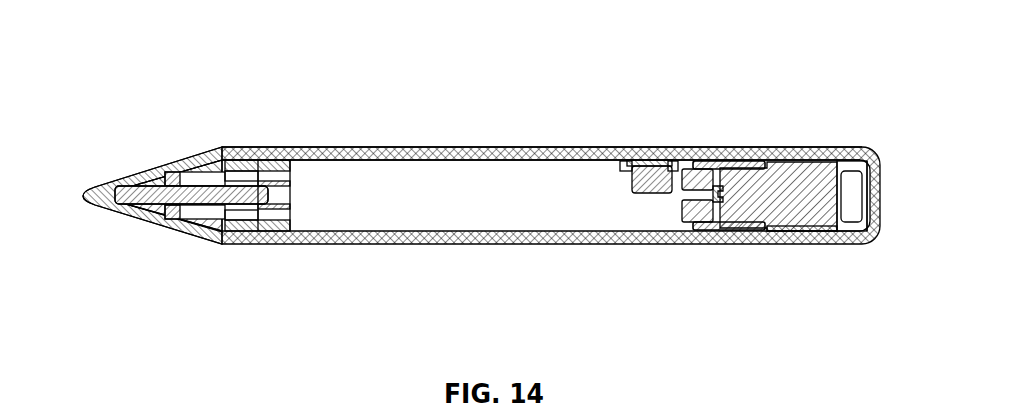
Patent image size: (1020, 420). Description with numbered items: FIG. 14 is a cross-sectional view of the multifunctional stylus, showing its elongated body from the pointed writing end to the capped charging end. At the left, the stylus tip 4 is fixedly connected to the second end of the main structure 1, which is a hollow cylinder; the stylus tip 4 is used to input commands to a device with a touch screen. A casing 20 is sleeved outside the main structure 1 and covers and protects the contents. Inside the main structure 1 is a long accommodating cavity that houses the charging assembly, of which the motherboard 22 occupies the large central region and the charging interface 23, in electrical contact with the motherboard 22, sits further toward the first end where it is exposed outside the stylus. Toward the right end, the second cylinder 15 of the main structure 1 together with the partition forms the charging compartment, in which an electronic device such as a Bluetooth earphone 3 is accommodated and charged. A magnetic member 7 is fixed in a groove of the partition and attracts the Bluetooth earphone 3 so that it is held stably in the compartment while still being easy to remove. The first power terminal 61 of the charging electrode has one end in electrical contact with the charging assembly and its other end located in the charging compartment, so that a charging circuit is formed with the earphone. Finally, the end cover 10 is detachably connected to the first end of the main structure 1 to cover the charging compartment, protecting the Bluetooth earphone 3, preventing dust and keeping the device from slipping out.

The main structure 1 is at (477, 234).
The casing 20 is at (485, 155).
The motherboard 22 is at (387, 185).
The stylus tip 4 is at (135, 187).
The charging interface 23 is at (648, 178).
The magnetic member 7 is at (716, 168).
The first power terminal 61 is at (720, 193).
The Bluetooth earphone 3 is at (790, 166).
The second cylinder 15 is at (773, 233).
The end cover 10 is at (838, 152).